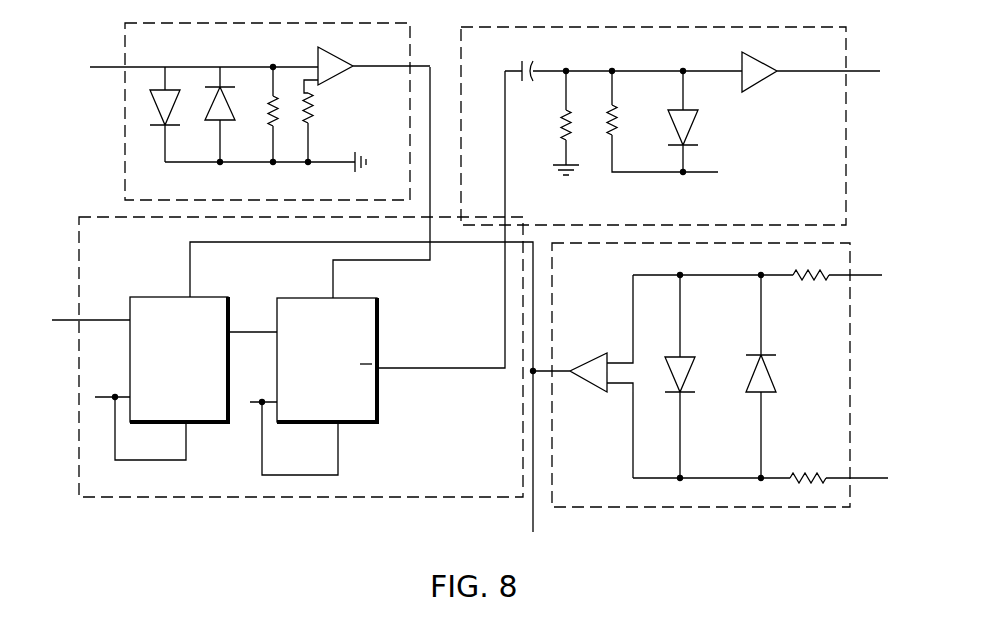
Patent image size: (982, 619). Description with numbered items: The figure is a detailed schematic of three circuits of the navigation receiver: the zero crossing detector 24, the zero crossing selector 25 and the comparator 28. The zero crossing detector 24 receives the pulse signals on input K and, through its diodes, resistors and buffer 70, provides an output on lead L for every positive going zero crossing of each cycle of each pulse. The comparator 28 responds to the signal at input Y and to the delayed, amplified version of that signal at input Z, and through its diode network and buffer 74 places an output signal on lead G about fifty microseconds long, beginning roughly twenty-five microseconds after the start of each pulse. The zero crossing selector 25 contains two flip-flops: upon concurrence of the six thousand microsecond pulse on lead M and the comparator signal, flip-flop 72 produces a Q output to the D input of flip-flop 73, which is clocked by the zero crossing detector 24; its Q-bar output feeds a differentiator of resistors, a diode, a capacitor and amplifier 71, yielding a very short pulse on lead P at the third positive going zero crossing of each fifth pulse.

The zero crossing detector 24 is at (125, 162).
The zero crossing selector 25 is at (846, 148).
The comparator 28 is at (699, 507).
The buffer amplifier 70 is at (350, 58).
The amplifier 71 is at (773, 64).
The flip-flop 72 is at (212, 297).
The flip-flop 73 is at (355, 298).
The inverting buffer 74 is at (590, 358).